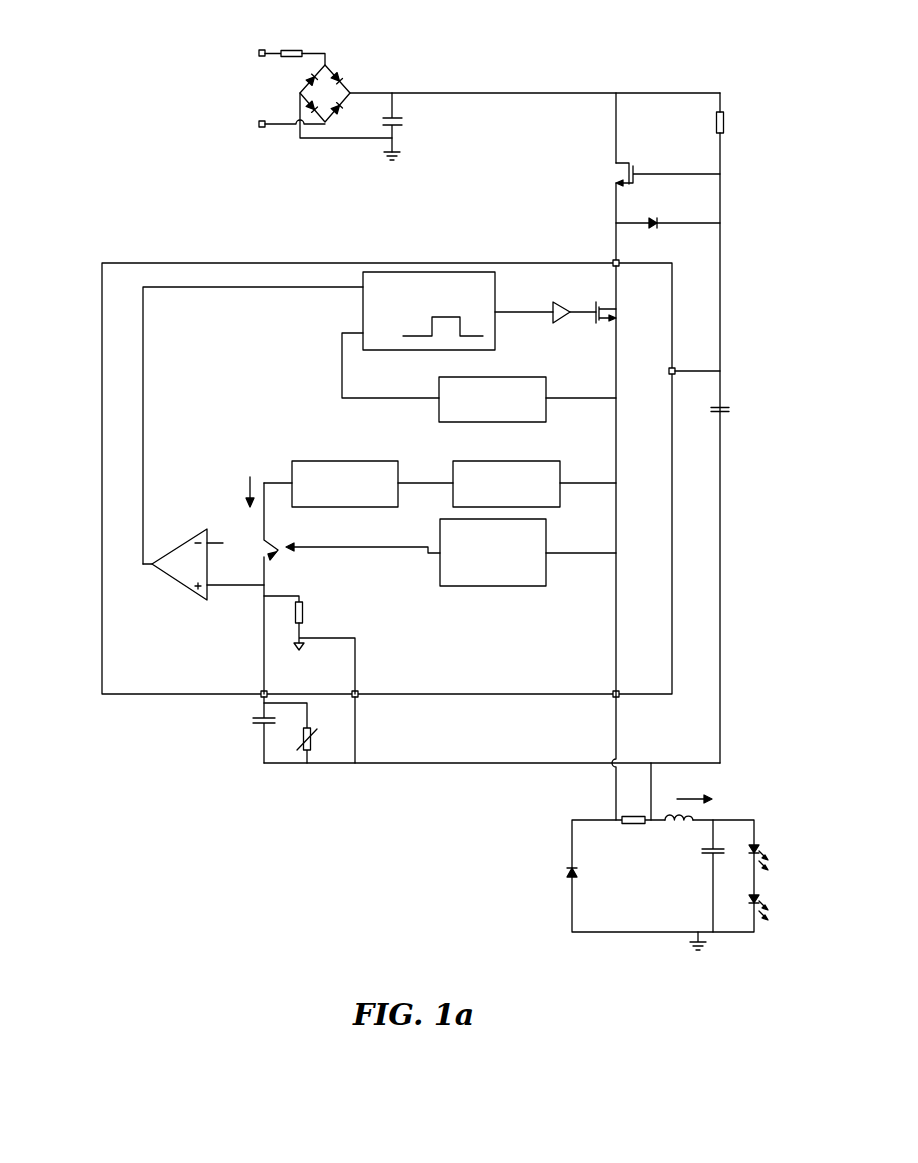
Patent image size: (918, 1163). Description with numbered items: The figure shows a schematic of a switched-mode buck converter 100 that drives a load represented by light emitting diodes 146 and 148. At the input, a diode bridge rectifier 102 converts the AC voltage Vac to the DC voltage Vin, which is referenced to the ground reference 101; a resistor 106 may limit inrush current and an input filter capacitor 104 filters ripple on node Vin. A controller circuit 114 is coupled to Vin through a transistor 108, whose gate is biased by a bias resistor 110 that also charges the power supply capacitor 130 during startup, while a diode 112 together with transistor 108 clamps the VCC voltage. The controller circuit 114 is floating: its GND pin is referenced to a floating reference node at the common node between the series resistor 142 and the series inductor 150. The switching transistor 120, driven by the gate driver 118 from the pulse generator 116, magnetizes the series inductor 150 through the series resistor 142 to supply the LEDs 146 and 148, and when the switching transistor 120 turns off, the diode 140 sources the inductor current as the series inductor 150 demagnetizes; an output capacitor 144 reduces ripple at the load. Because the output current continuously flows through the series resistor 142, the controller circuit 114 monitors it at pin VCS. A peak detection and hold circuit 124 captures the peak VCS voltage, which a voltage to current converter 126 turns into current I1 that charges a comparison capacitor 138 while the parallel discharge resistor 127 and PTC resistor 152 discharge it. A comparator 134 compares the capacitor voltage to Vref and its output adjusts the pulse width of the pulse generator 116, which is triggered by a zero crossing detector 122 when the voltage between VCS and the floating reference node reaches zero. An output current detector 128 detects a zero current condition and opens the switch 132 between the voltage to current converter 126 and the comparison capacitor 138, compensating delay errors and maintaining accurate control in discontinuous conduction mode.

The switched-mode buck converter 100 is at (103, 47).
The ground reference 101 is at (400, 160).
The diode bridge rectifier 102 is at (336, 74).
The input filter capacitor 104 is at (385, 118).
The resistor 106 is at (290, 50).
The transistor 108 is at (619, 162).
The bias resistor 110 is at (724, 124).
The diode 112 is at (653, 218).
The controller circuit 114 is at (345, 263).
The pulse generator 116 is at (497, 290).
The gate driver 118 is at (562, 302).
The switching transistor 120 is at (606, 326).
The zero crossing detector 122 is at (500, 377).
The peak detection and hold circuit 124 is at (516, 461).
The voltage to current converter 126 is at (375, 461).
The discharge resistor 127 is at (304, 613).
The output current detector 128 is at (548, 537).
The power supply capacitor 130 is at (725, 406).
The switch 132 is at (272, 540).
The comparator 134 is at (196, 536).
The comparison capacitor 138 is at (258, 728).
The diode 140 is at (566, 881).
The series resistor 142 is at (631, 828).
The output capacitor 144 is at (703, 857).
The light emitting diode 146 is at (757, 847).
The light emitting diode 148 is at (757, 897).
The series inductor 150 is at (683, 824).
The PTC resistor 152 is at (311, 728).